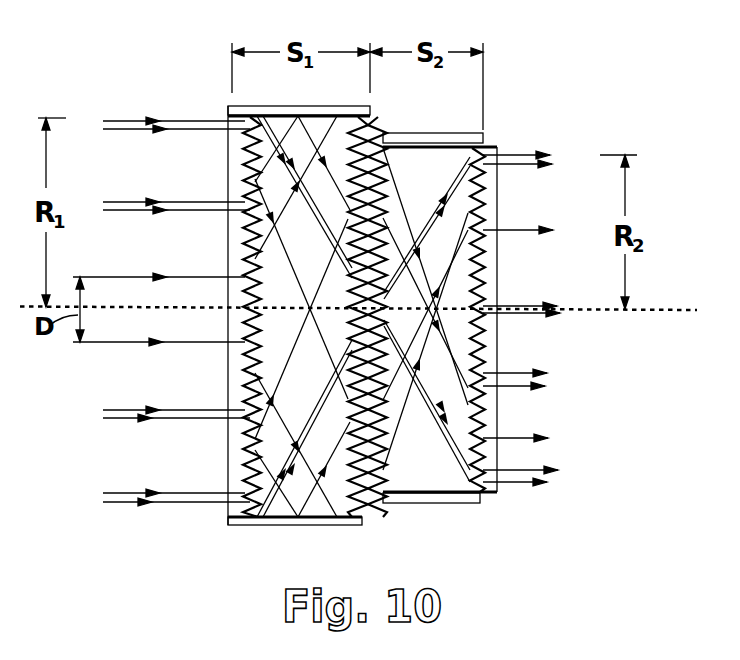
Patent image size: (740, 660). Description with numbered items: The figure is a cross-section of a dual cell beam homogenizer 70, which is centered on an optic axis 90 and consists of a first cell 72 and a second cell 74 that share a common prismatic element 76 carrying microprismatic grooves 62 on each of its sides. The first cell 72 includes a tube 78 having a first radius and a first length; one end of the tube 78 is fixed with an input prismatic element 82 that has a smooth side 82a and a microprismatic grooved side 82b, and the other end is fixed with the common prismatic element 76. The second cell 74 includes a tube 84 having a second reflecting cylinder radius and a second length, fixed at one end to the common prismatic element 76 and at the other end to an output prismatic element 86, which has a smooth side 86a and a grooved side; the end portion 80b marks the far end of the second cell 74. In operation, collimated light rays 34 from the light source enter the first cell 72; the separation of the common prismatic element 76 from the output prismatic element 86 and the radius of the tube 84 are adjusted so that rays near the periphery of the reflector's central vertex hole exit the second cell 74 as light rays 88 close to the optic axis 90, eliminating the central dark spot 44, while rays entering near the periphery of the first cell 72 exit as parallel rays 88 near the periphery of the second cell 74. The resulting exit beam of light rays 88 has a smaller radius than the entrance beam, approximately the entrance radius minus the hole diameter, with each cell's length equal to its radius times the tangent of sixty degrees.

The light rays 34 is at (123, 418).
The dark spot 44 is at (215, 277).
The microprismatic grooves 62 is at (384, 181).
The dual cell beam homogenizer 70 is at (616, 552).
The first cell 72 is at (365, 345).
The second cell 74 is at (476, 348).
The common prismatic element 76 is at (365, 514).
The tube 78 is at (315, 106).
The end portion of second element 80b is at (458, 494).
The input prismatic element 82 is at (241, 350).
The smooth side 82a is at (226, 458).
The microprismatic grooved side 82b is at (264, 505).
The tube 84 is at (405, 133).
The output prismatic element 86 is at (498, 348).
The smooth side 86a is at (498, 417).
The light rays 88 is at (515, 230).
The optic axis 90 is at (593, 310).